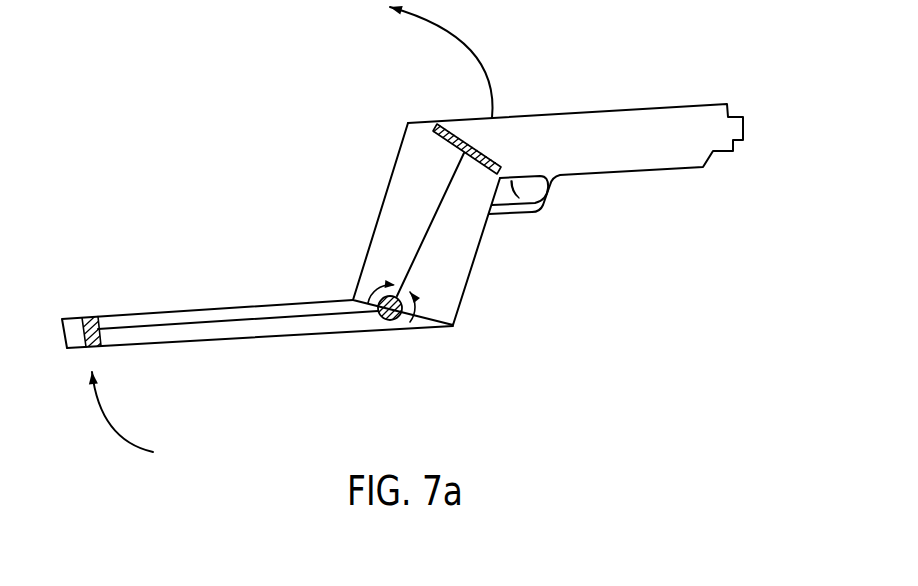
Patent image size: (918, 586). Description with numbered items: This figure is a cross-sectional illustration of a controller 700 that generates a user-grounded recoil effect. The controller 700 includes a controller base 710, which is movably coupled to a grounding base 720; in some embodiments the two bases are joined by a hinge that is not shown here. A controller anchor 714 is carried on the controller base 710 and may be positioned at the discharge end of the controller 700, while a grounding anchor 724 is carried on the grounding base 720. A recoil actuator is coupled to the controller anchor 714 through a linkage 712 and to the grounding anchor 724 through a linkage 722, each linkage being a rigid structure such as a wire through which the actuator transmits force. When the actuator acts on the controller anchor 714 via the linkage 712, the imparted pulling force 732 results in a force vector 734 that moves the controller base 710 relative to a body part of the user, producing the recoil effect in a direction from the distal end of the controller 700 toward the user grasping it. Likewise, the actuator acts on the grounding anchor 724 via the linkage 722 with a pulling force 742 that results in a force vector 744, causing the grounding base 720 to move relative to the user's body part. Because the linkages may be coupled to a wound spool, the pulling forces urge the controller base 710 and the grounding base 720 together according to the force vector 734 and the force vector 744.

The controller 700 is at (753, 68).
The controller base 710 is at (753, 310).
The linkage 712 is at (437, 215).
The controller anchor 714 is at (487, 153).
The grounding base 720 is at (352, 295).
The linkage 722 is at (245, 320).
The grounding anchor 724 is at (82, 323).
The pulling force 732 is at (410, 309).
The force vector 734 is at (473, 53).
The pulling force 742 is at (373, 297).
The force vector 744 is at (107, 420).